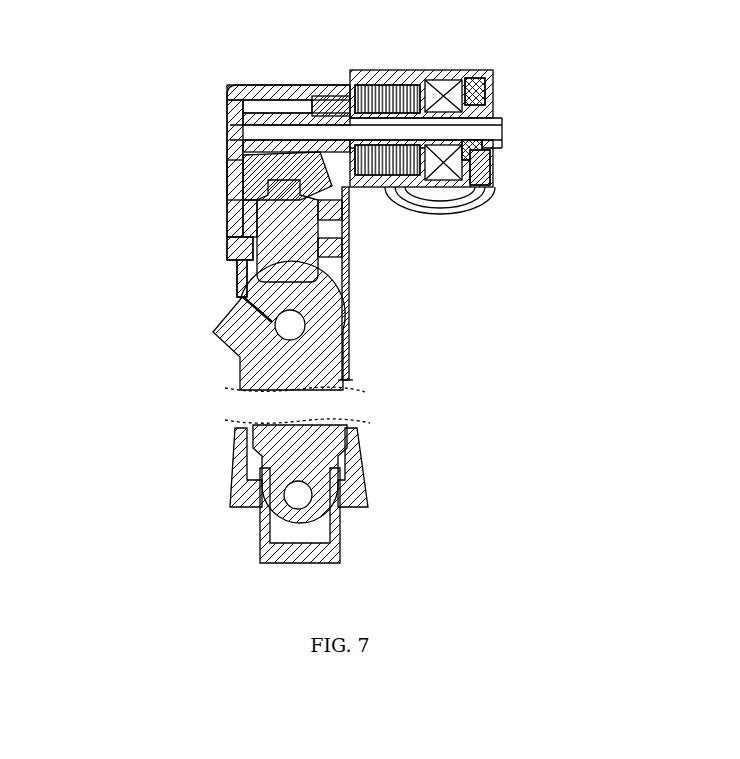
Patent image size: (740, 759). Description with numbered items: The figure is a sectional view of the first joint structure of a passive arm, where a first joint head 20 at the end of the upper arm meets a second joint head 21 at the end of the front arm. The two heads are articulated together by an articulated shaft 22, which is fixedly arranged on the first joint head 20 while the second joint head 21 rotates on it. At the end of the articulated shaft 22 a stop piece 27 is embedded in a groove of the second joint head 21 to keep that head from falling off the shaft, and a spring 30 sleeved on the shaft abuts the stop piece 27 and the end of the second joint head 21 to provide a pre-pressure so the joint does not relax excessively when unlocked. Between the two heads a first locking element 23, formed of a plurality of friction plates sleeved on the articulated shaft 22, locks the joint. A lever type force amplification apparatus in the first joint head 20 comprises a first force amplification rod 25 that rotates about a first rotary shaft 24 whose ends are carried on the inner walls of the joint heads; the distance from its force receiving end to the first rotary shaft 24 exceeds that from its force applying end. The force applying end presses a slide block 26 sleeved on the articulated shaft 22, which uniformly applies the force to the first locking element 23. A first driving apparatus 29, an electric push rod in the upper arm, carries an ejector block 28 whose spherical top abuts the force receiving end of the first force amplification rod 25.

The first joint head 20 is at (227, 143).
The second joint head 21 is at (455, 78).
The articulated shaft 22 is at (502, 125).
The first locking element 23 is at (440, 213).
The first rotary shaft 24 is at (347, 215).
The first force amplification rod 25 is at (228, 185).
The slide block 26 is at (322, 100).
The stop piece 27 is at (494, 168).
The ejector block 28 is at (238, 253).
The first driving apparatus 29 is at (240, 353).
The spring 30 is at (500, 152).